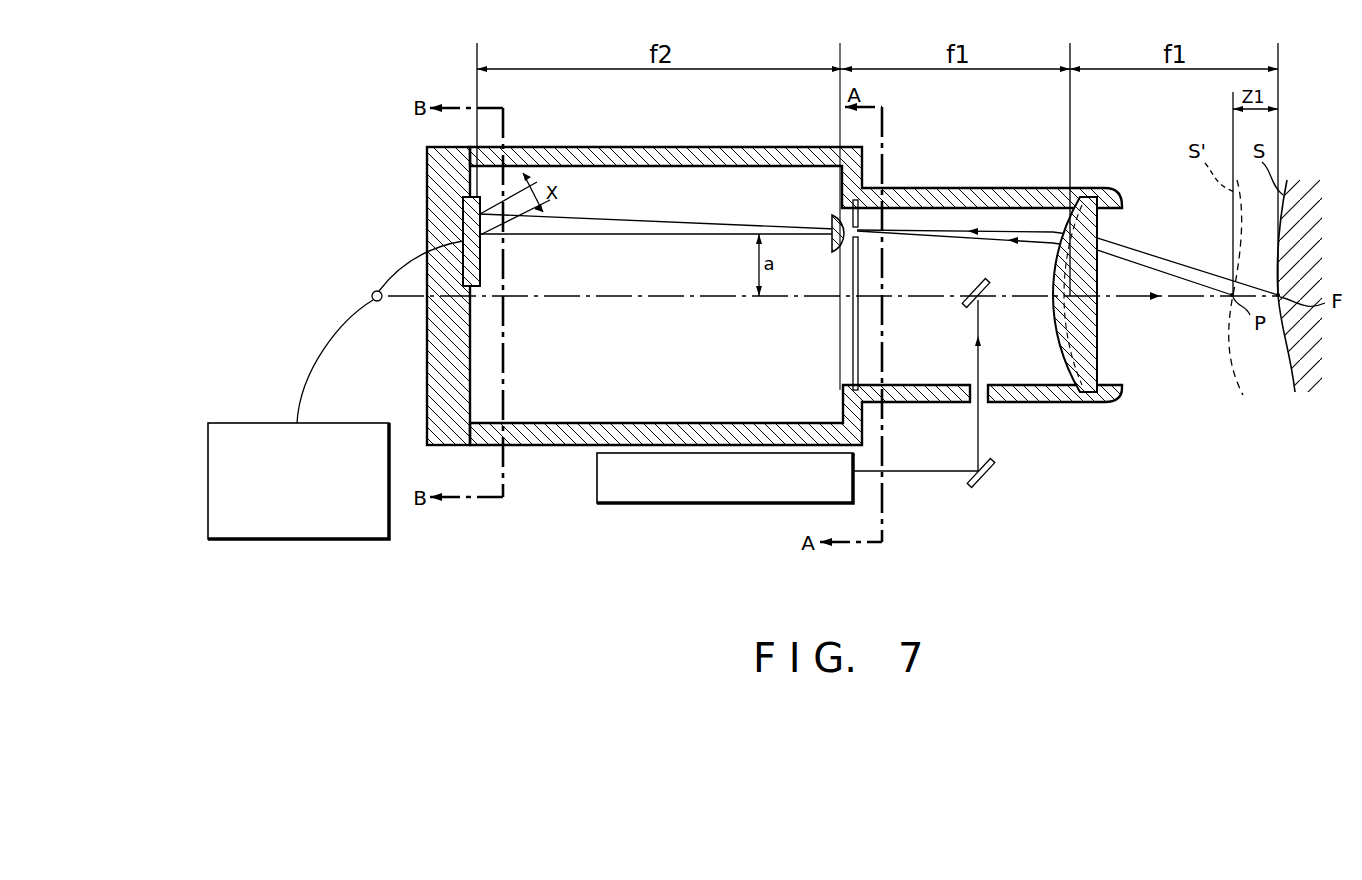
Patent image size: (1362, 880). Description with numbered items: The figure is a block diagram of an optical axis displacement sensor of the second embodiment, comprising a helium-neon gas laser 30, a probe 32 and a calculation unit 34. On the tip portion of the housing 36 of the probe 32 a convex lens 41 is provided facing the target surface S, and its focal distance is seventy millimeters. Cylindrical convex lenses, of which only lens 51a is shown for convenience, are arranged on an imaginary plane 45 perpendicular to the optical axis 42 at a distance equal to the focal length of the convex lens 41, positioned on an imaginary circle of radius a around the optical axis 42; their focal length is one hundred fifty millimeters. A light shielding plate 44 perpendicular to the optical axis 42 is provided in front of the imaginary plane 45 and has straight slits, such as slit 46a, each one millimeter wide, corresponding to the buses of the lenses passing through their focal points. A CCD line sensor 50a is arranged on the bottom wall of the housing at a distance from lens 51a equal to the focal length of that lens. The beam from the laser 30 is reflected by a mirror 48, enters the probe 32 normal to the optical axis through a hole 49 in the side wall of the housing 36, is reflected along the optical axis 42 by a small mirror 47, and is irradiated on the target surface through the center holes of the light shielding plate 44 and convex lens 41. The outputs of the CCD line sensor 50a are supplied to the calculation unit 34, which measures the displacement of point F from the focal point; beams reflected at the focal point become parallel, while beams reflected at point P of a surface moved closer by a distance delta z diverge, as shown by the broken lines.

The helium-neon gas laser 30 is at (645, 503).
The probe 32 is at (427, 197).
The calculation unit 34 is at (348, 540).
The housing 36 is at (647, 147).
The convex lens 41 is at (1098, 350).
The optical axis 42 is at (680, 300).
The light shielding plate 44 is at (855, 368).
The imaginary plane 45 is at (838, 322).
The straight slit 46a is at (858, 226).
The small mirror 47 is at (965, 306).
The mirror 48 is at (995, 465).
The hole 49 is at (987, 401).
The CCD line sensor 50a is at (480, 270).
The cylindrical convex lens 51a is at (830, 226).